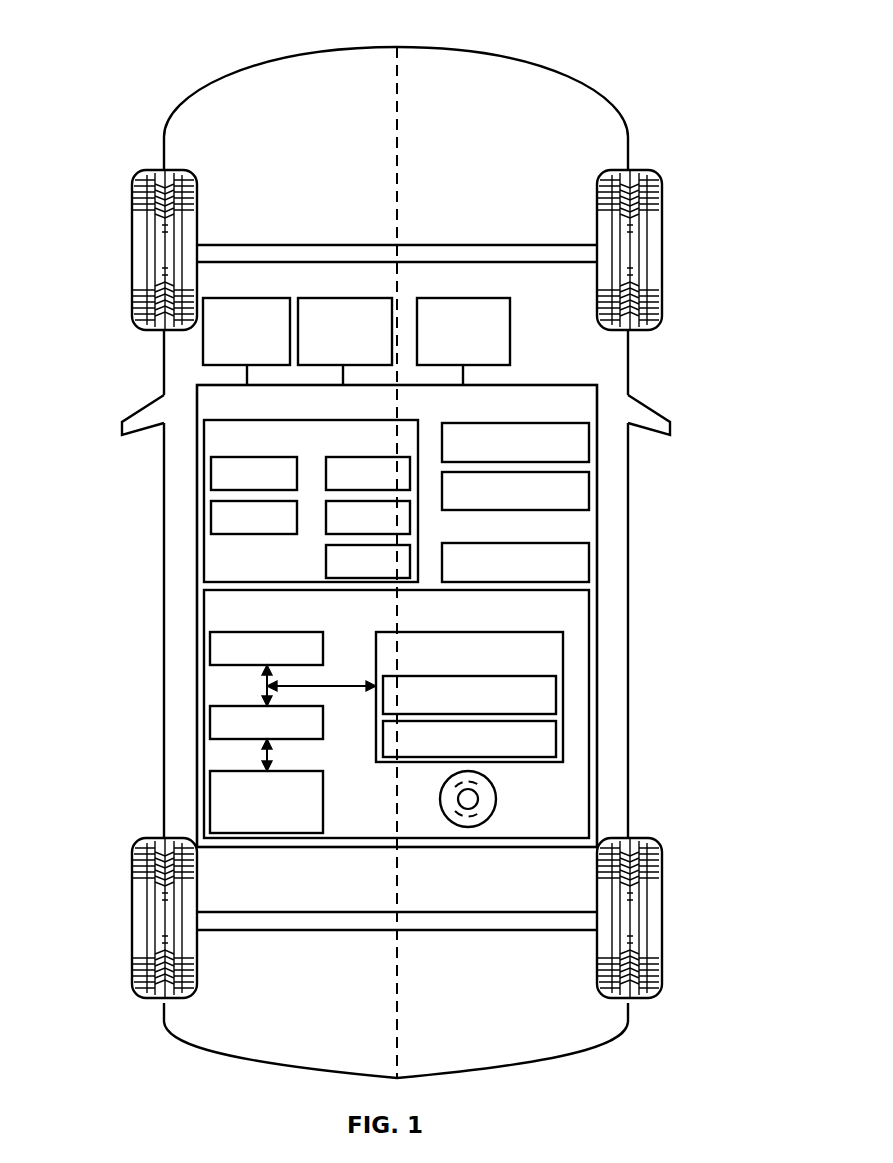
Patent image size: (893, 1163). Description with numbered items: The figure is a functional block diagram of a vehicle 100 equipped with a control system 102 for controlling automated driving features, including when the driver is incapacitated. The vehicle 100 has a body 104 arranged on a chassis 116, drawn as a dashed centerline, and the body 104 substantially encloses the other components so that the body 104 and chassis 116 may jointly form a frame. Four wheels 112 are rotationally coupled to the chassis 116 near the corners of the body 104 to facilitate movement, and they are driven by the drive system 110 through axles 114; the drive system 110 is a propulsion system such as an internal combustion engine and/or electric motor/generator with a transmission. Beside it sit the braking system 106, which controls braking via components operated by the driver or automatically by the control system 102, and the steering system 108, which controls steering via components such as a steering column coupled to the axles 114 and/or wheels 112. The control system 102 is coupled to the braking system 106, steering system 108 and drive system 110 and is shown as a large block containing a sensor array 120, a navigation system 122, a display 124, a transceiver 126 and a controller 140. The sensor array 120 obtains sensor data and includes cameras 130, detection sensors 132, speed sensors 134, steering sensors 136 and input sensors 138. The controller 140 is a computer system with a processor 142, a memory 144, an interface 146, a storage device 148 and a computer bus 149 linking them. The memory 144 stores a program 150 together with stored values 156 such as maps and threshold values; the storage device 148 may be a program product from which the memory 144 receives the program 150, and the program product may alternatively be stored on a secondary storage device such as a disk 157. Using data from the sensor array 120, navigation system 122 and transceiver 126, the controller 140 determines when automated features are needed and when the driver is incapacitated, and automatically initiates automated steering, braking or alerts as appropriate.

The vehicle 100 is at (625, 34).
The control system 102 is at (542, 385).
The body 104 is at (164, 466).
The braking system 106 is at (267, 298).
The steering system 108 is at (359, 298).
The drive system 110 is at (460, 298).
The wheels 112 is at (132, 240).
The axles 114 is at (272, 252).
The chassis 116 is at (398, 100).
The sensor array 120 is at (197, 430).
The navigation system 122 is at (592, 432).
The display 124 is at (589, 492).
The transceiver 126 is at (589, 565).
The cameras 130 is at (211, 472).
The detection sensors 132 is at (211, 510).
The speed sensors 134 is at (410, 466).
The steering sensors 136 is at (410, 508).
The input sensors 138 is at (326, 570).
The controller 140 is at (204, 617).
The processor 142 is at (210, 648).
The memory 144 is at (563, 650).
The interface 146 is at (210, 722).
The storage device 148 is at (210, 783).
The computer bus 149 is at (267, 684).
The program 150 is at (556, 688).
The stored values 156 is at (556, 735).
The disk 157 is at (497, 800).